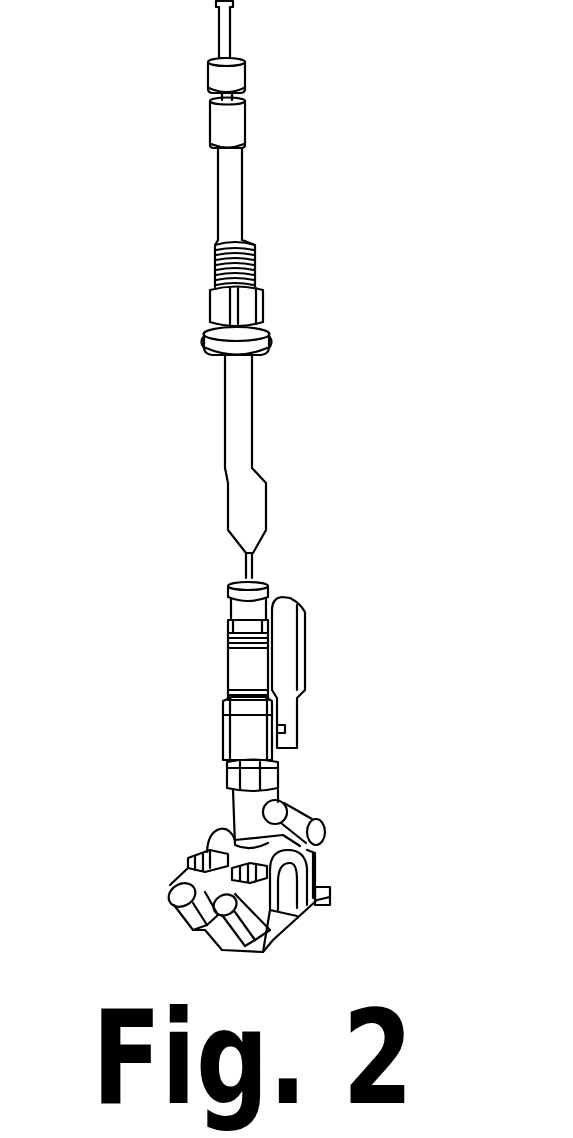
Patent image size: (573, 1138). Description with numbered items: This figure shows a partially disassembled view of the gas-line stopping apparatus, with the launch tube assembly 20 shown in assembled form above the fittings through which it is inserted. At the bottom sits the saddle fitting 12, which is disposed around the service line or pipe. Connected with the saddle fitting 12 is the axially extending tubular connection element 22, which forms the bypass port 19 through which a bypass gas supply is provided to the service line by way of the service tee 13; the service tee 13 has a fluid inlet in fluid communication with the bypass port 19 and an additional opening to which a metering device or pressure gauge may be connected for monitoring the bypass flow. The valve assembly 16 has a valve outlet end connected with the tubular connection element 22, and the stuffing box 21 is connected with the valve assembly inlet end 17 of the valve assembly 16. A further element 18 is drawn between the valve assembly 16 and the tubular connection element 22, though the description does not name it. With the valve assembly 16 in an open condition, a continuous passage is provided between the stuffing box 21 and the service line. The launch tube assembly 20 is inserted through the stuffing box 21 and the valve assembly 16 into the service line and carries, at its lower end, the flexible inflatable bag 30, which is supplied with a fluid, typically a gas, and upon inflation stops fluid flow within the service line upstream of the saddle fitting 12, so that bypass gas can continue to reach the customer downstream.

The saddle fitting 12 is at (300, 923).
The service tee 13 is at (303, 812).
The valve assembly 16 is at (225, 723).
The valve assembly inlet end 17 is at (225, 690).
The nut 18 is at (232, 787).
The bypass port 19 is at (232, 805).
The launch tube assembly 20 is at (257, 252).
The stuffing box 21 is at (267, 587).
The axially extending tubular connection element 22 is at (283, 790).
The flexible inflatable bag 30 is at (257, 478).